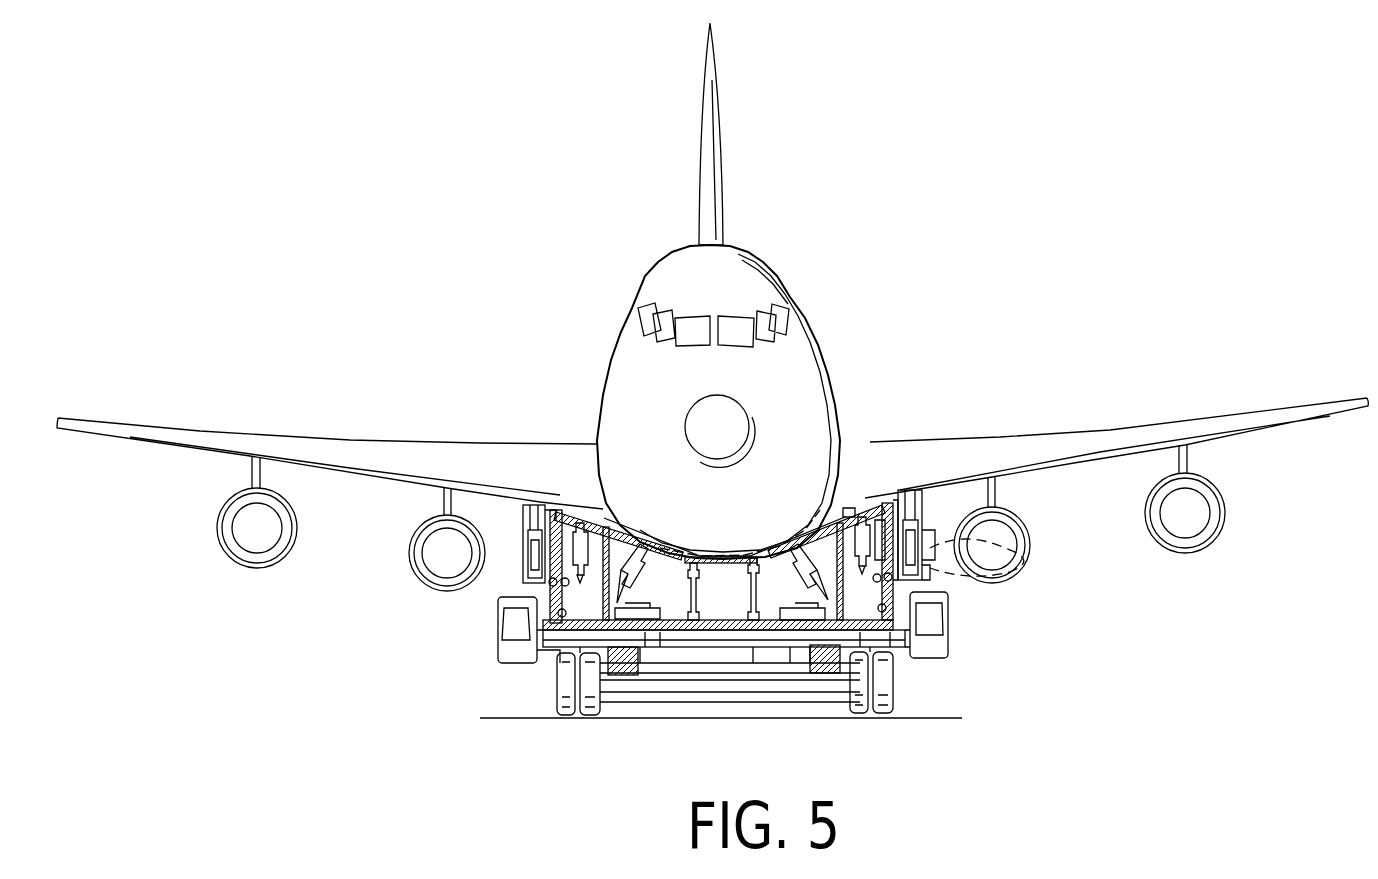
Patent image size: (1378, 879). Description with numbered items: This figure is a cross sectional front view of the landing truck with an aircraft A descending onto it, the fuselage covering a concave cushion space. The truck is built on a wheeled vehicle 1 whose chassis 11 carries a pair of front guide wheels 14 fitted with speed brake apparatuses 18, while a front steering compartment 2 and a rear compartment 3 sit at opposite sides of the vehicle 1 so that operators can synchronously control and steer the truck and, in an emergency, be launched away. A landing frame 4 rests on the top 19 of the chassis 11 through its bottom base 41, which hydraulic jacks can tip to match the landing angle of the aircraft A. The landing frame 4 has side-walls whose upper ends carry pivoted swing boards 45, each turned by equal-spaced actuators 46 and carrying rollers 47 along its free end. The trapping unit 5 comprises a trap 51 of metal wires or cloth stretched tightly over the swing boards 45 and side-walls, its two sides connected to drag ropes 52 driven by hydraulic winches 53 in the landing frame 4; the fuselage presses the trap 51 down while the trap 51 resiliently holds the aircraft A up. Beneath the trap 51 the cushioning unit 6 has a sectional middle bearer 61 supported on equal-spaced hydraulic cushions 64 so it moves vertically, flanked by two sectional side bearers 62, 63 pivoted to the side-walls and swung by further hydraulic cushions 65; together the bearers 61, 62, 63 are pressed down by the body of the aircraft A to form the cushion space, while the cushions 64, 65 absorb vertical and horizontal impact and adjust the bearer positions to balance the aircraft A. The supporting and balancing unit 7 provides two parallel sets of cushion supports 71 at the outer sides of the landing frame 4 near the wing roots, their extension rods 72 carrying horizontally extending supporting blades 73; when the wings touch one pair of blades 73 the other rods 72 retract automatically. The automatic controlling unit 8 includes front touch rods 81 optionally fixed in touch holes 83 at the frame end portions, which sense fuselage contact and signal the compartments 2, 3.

The aircraft A is at (798, 294).
The wheeled vehicle 1 is at (690, 705).
The front steering compartment 2 is at (493, 650).
The rear compartment 3 is at (955, 647).
The landing frame 4 is at (741, 632).
The trapping unit 5 is at (568, 492).
The cushioning unit 6 is at (682, 522).
The supporting and balancing unit 7 is at (925, 543).
The automatic controlling unit 8 is at (930, 500).
The chassis 11 is at (790, 660).
The front guide wheels 14 is at (887, 712).
The speed brake apparatuses 18 is at (832, 660).
The top of the chassis 19 is at (555, 645).
The bottom base 41 is at (655, 635).
The swing boards 45 is at (852, 505).
The actuators 46 is at (930, 572).
The rollers 47 is at (880, 520).
The trap 51 is at (583, 515).
The drag ropes 52 is at (893, 622).
The hydraulic winches 53 is at (585, 700).
The middle bearer 61 is at (728, 555).
The side bearer 62 is at (624, 520).
The side bearer 63 is at (792, 545).
The hydraulic cushions 64 is at (700, 583).
The hydraulic cushions 65 is at (640, 578).
The cushion supports 71 is at (535, 548).
The extension rods 72 is at (920, 505).
The supporting blade 73 is at (536, 497).
The front touch rods 81 is at (935, 510).
The touch holes 83 is at (930, 558).